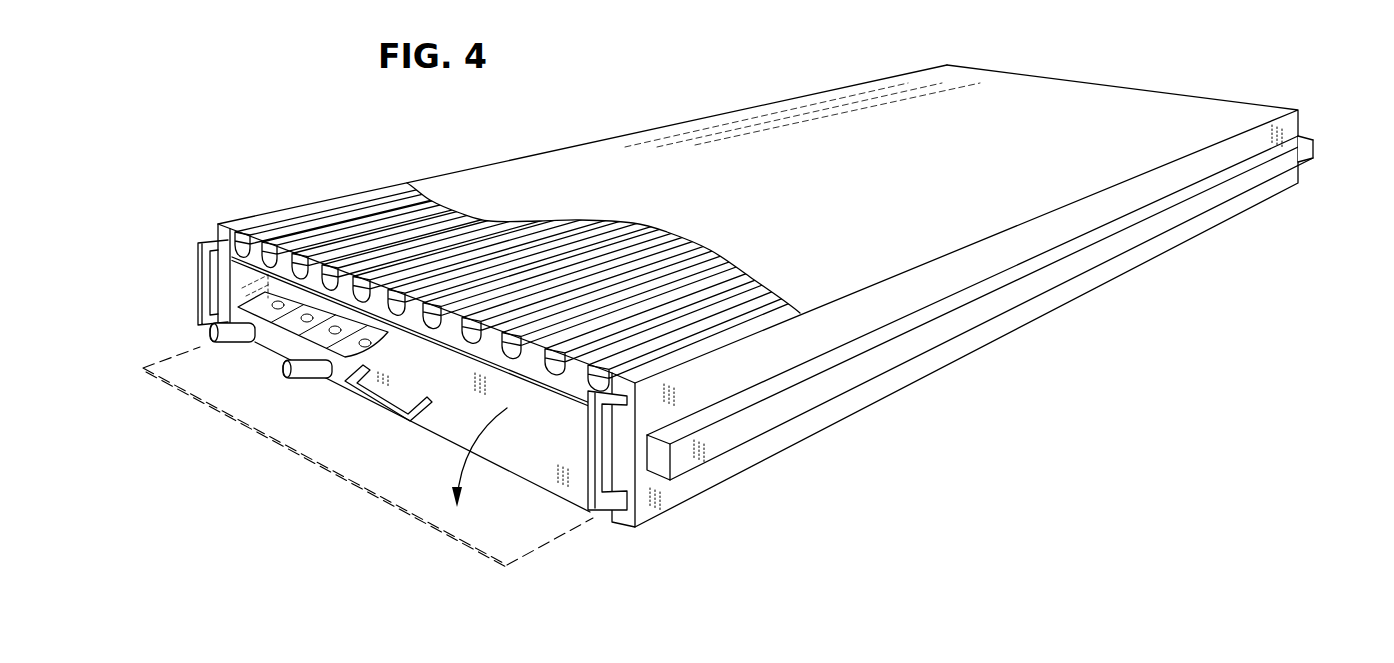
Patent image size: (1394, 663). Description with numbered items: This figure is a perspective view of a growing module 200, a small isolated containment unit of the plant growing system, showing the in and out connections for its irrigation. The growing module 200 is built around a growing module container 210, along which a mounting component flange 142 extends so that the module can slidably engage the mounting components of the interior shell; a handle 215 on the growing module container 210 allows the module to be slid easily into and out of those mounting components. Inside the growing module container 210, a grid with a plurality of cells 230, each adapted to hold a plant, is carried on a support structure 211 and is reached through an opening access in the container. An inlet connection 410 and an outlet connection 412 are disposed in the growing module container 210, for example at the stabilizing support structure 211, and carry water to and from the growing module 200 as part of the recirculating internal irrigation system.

The growing module 200 is at (977, 415).
The growing module container 210 is at (1285, 190).
The mounting component flange 142 is at (1015, 298).
The cells 230 is at (268, 297).
The support structure 211 is at (232, 307).
The handle 215 is at (627, 500).
The inlet connection 410 is at (207, 333).
The outlet connection 412 is at (283, 377).